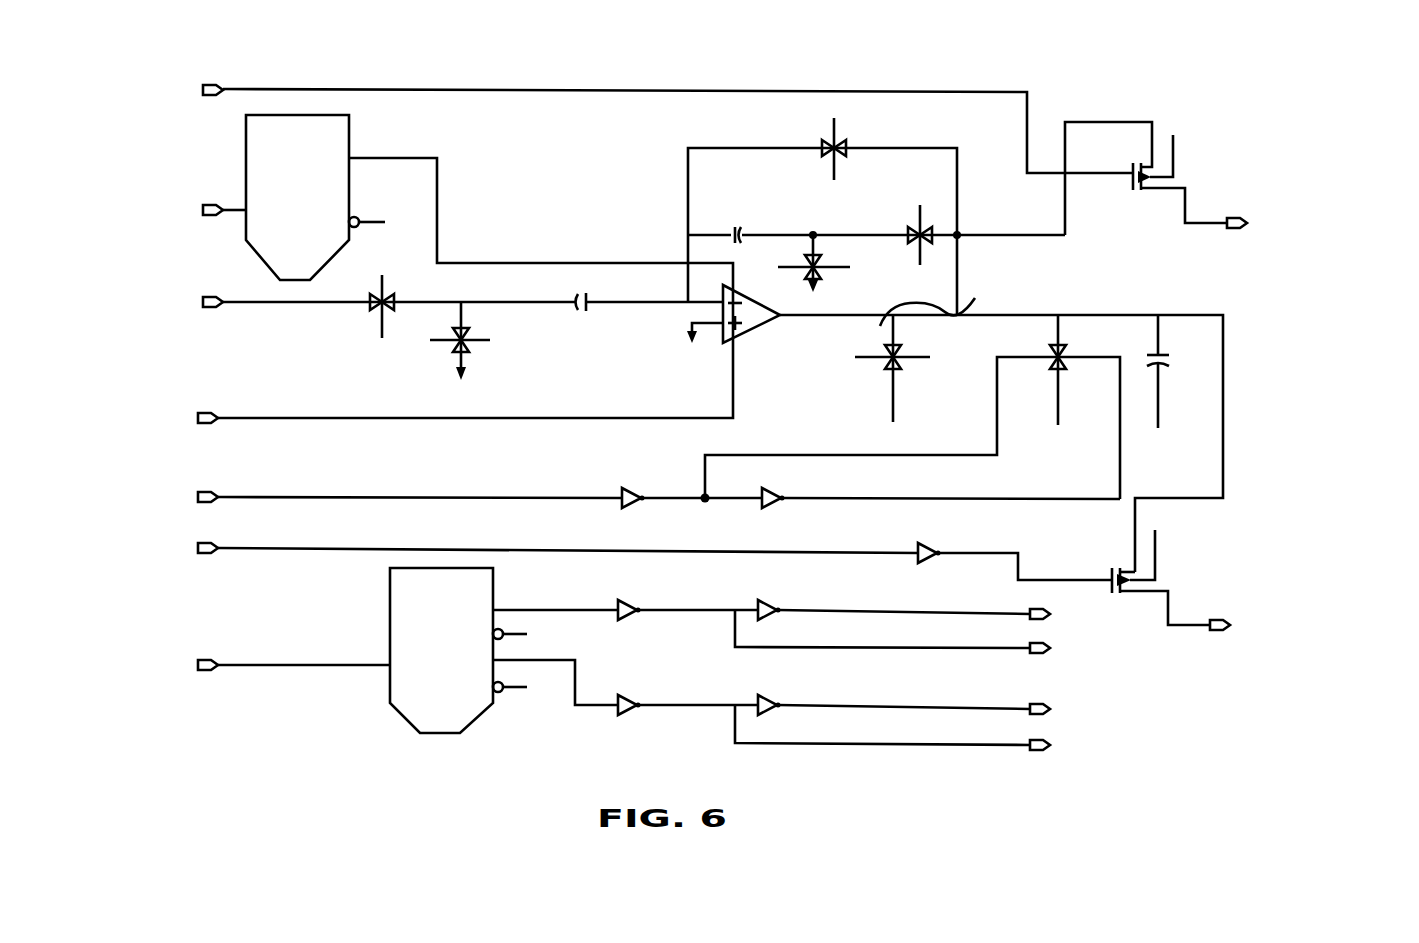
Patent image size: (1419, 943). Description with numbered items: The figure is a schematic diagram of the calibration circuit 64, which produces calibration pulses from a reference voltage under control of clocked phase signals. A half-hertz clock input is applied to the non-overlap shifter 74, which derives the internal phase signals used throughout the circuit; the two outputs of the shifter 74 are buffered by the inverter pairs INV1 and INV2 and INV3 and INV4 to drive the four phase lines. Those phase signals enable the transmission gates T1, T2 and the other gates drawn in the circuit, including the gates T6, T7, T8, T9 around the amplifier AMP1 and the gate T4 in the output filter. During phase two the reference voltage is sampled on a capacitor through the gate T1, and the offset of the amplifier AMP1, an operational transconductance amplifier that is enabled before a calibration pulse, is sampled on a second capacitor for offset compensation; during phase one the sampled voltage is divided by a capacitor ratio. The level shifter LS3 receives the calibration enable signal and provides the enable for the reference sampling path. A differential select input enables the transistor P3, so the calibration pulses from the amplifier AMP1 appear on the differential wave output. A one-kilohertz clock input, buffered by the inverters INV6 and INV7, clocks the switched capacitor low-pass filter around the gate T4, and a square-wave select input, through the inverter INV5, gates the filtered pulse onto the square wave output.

The calibration circuit 64 is at (585, 52).
The non-overlap (NOLS) shifter 74 is at (390, 592).
The level shifter LS3 is at (315, 197).
The transmission gate T1 is at (376, 302).
The transmission gate T2 is at (470, 354).
The transmission gate T4 is at (912, 407).
The transmission gate T6 is at (825, 154).
The transmission gate T7 is at (823, 276).
The transmission gate T8 is at (913, 238).
The transmission gate T9 is at (911, 384).
The amplifier AMP1 is at (736, 331).
The transistor P3 is at (1184, 167).
The inverter INV1 is at (650, 624).
The inverter INV2 is at (792, 624).
The inverter INV3 is at (652, 719).
The inverter INV4 is at (792, 719).
The inverter INV5 is at (952, 568).
The inverter INV6 is at (656, 512).
The inverter INV7 is at (796, 512).